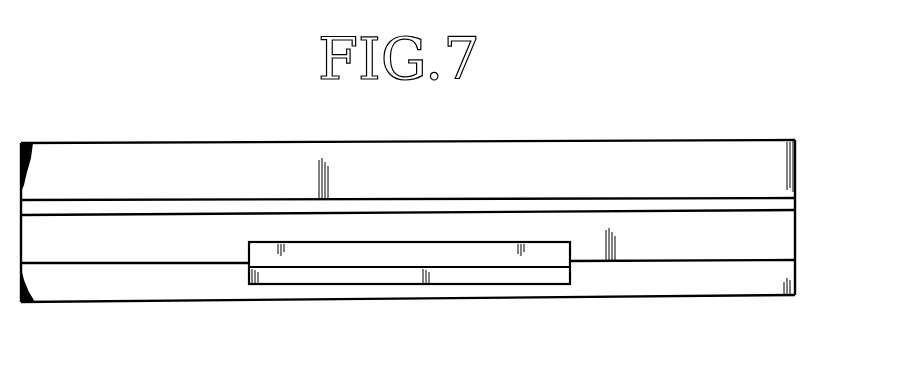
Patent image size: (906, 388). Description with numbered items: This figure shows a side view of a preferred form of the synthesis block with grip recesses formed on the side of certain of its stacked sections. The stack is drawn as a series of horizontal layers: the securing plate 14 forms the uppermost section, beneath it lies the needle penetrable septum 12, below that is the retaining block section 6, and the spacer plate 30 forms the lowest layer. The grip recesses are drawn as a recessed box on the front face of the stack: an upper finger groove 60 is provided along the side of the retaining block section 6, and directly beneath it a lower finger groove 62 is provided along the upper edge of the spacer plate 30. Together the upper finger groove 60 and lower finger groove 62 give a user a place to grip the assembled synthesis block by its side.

The securing plate 14 is at (767, 153).
The needle penetrable septum 12 is at (787, 207).
The retaining block section 6 is at (782, 238).
The spacer plate 30 is at (767, 282).
The upper finger groove 60 is at (302, 260).
The lower finger groove 62 is at (400, 278).